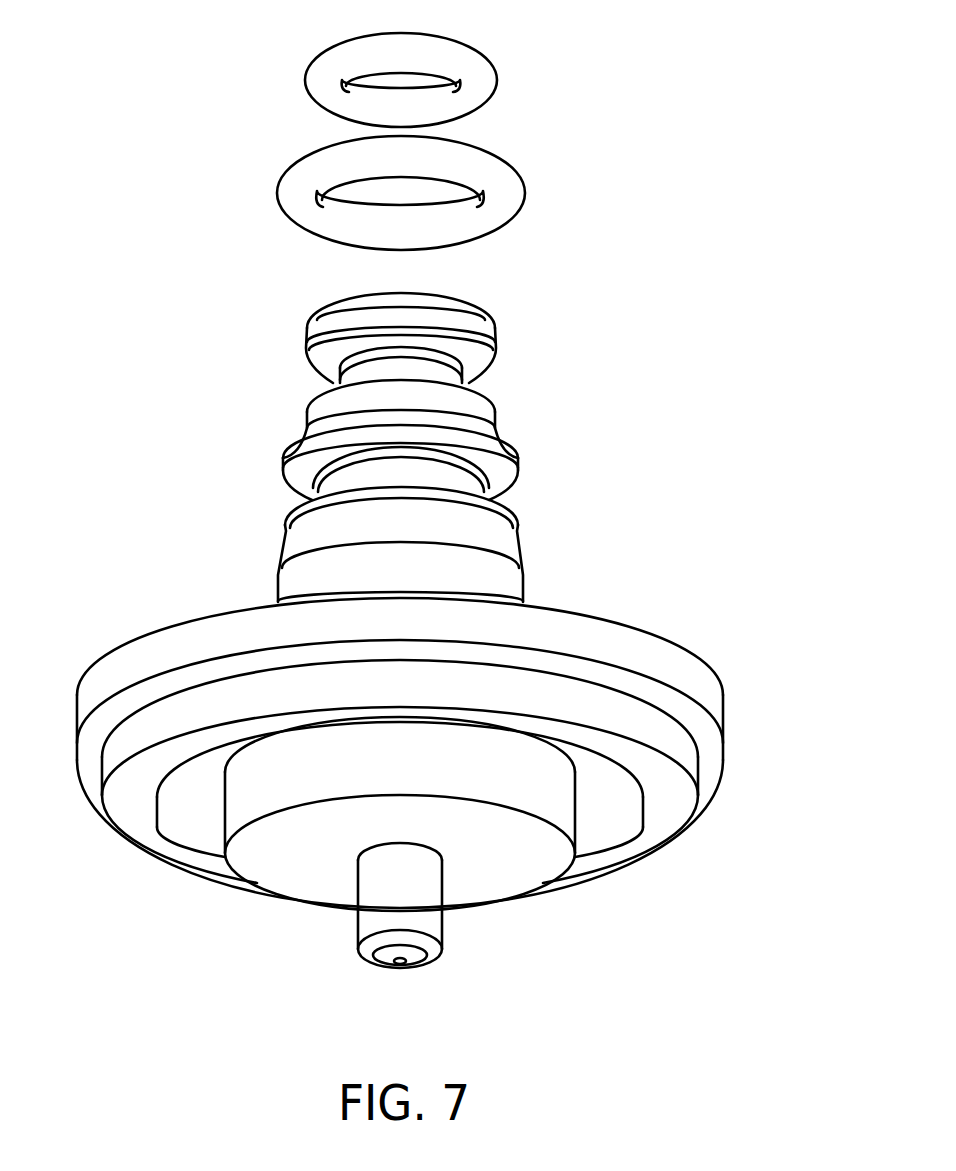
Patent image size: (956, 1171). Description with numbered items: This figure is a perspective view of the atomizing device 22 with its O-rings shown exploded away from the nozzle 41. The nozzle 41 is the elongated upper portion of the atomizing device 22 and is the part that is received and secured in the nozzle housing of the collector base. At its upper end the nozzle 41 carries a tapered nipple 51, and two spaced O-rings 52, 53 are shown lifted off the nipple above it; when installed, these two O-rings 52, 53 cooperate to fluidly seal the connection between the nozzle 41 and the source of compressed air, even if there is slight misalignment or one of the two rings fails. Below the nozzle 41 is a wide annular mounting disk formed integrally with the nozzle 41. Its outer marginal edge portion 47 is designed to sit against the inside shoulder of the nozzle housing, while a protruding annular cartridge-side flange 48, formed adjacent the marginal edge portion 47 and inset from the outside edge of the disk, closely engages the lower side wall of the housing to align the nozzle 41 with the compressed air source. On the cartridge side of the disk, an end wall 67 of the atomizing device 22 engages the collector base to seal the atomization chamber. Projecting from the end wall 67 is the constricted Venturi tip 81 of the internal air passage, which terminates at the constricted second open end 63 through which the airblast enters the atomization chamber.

The atomizing device 22 is at (162, 563).
The O-ring 52 is at (497, 70).
The O-ring 53 is at (525, 187).
The tapered nipple 51 is at (495, 338).
The nozzle 41 is at (519, 545).
The marginal edge portion 47 is at (710, 760).
The cartridge-side flange 48 is at (663, 828).
The end wall 67 is at (517, 875).
The Venturi tip 81 is at (367, 923).
The second open end 63 is at (400, 967).